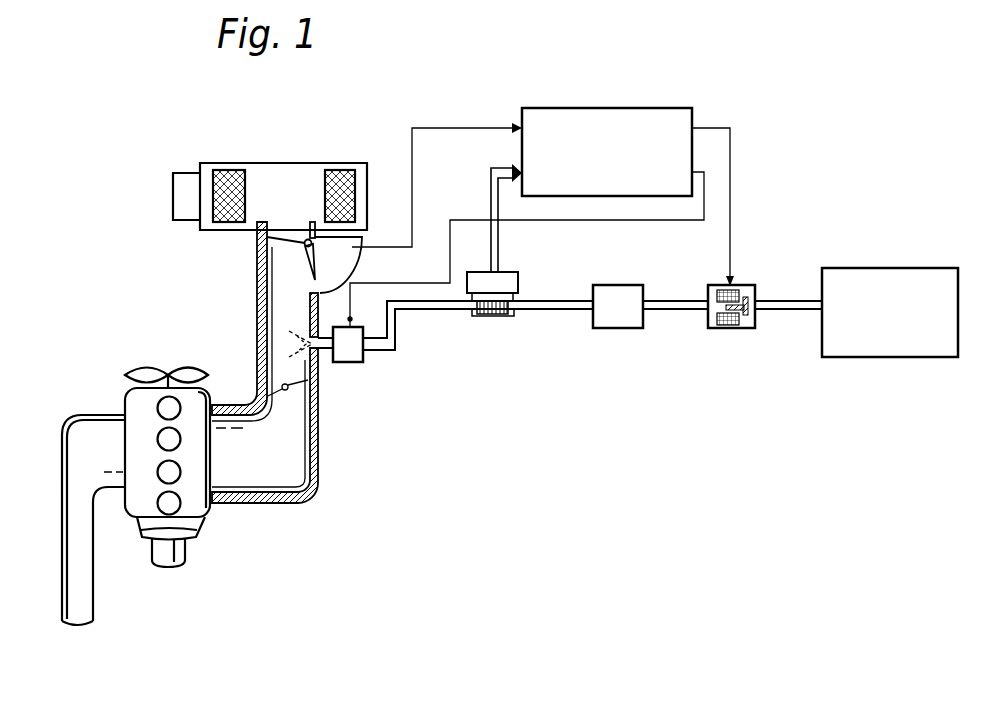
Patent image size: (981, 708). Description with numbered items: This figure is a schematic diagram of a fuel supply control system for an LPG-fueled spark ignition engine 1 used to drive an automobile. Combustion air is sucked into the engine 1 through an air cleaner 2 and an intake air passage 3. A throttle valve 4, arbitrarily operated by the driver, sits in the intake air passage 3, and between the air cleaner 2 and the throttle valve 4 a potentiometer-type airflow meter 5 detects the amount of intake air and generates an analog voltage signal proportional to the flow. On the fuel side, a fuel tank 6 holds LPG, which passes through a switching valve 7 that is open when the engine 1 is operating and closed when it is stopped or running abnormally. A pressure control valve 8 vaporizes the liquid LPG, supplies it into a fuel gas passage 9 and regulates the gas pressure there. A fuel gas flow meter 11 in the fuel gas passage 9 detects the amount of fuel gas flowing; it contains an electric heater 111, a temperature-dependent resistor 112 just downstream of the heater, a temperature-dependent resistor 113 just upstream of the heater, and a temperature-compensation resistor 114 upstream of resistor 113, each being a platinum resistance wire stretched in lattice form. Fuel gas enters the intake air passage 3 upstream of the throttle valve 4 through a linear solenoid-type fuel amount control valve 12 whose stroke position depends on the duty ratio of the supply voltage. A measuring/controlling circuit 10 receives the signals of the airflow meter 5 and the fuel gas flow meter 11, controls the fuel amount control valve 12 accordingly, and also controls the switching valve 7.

The spark ignition engine 1 is at (135, 402).
The air cleaner 2 is at (282, 163).
The intake air passage 3 is at (318, 478).
The throttle valve 4 is at (289, 389).
The potentiometer-type airflow meter 5 is at (351, 258).
The fuel tank 6 is at (898, 348).
The switching valve 7 is at (747, 323).
The pressure control valve 8 is at (624, 320).
The fuel gas passage 9 is at (425, 312).
The measuring/controlling circuit 10 is at (636, 107).
The fuel gas flow meter 11 is at (514, 272).
The linear solenoid-type fuel amount control valve 12 is at (349, 356).
The electric heater 111 is at (488, 317).
The temperature-dependent resistor 112 is at (480, 316).
The temperature-dependent resistor 113 is at (495, 317).
The temperature-compensation resistor 114 is at (513, 317).